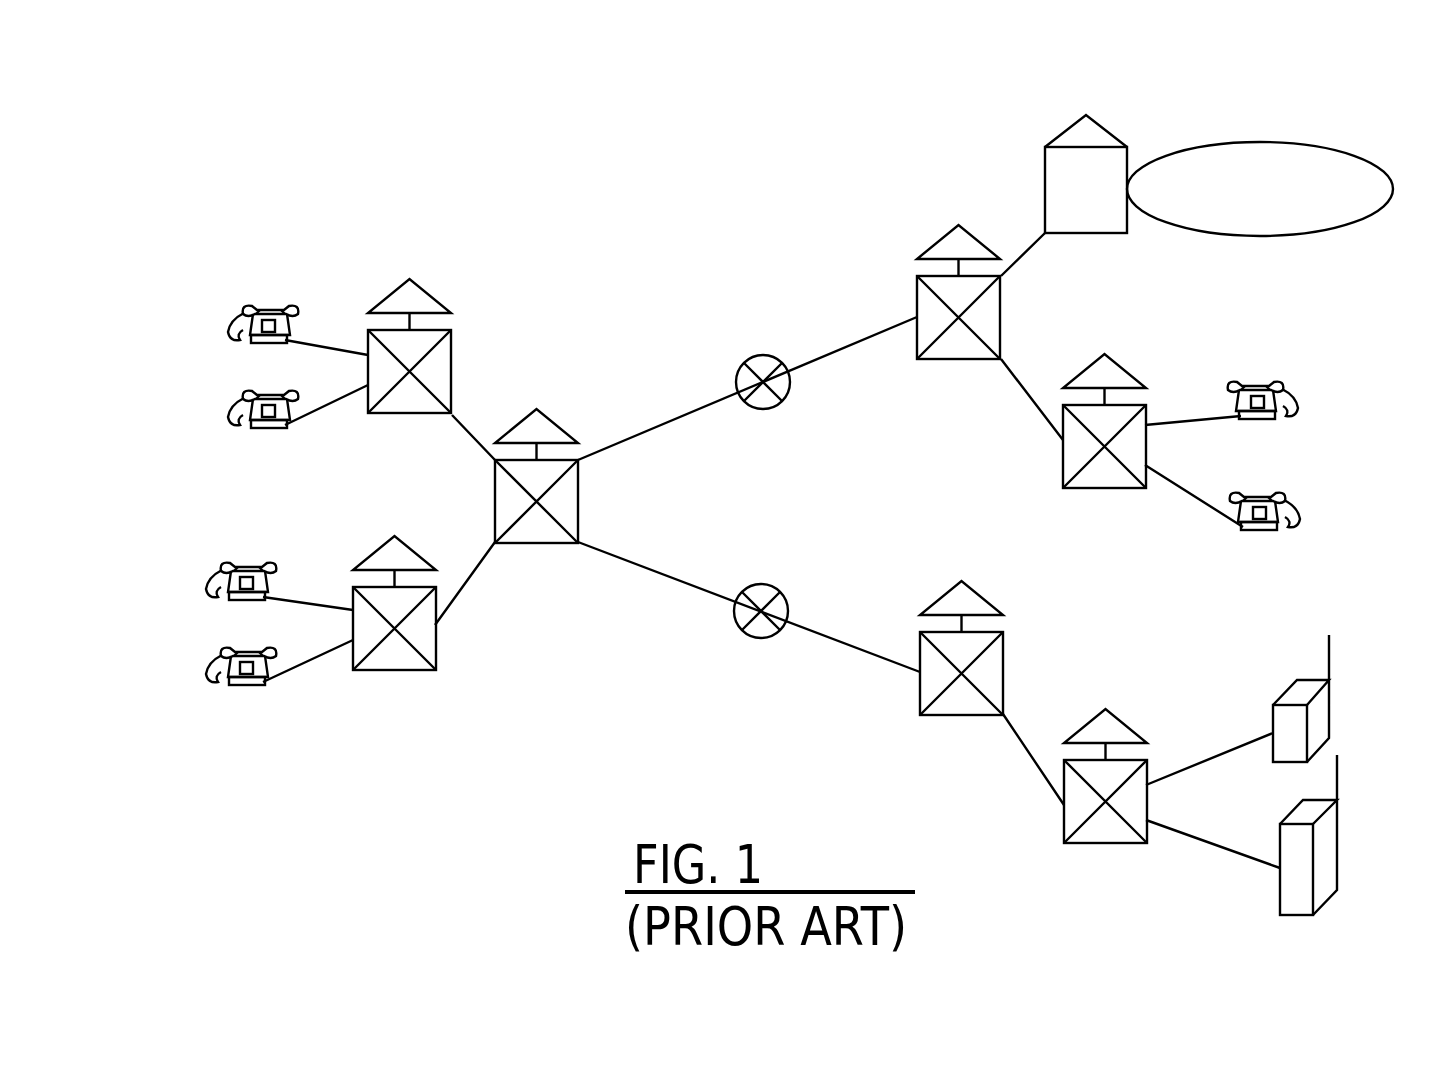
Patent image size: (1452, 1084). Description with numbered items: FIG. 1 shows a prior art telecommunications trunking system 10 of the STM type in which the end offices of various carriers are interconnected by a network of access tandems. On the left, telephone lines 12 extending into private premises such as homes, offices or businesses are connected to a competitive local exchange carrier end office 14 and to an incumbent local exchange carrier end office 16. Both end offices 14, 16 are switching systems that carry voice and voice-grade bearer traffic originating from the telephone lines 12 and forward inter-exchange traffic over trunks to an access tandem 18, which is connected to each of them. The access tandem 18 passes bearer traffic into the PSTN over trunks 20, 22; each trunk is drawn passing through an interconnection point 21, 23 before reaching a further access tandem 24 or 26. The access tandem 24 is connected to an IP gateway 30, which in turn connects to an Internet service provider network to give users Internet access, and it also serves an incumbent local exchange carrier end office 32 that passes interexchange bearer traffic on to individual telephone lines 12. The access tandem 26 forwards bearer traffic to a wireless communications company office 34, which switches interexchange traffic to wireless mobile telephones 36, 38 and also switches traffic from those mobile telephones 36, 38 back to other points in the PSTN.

The prior art telecommunications network 10 is at (458, 762).
The telephone lines 12 is at (243, 312).
The competitive local exchange carrier end office 14 is at (453, 337).
The incumbent local exchange carrier end office 16 is at (437, 653).
The access tandem 18 is at (556, 425).
The trunk 20 is at (703, 409).
The interconnection point 21 is at (777, 360).
The trunk 22 is at (825, 633).
The interconnection point 23 is at (790, 608).
The access tandem 24 is at (917, 276).
The access tandem 26 is at (920, 714).
The IP gateway 30 is at (1113, 132).
The incumbent local exchange carrier end office 32 is at (1146, 405).
The wireless communications company office 34 is at (1120, 720).
The wireless mobile telephone 36 is at (1332, 700).
The wireless mobile telephone 38 is at (1340, 832).